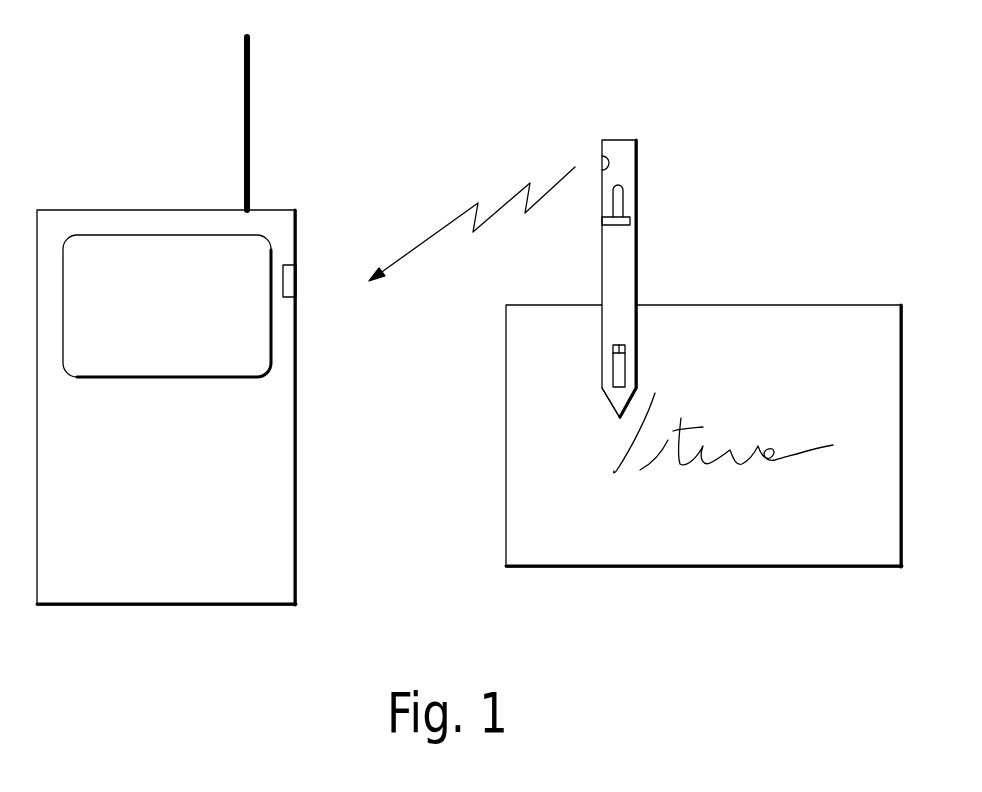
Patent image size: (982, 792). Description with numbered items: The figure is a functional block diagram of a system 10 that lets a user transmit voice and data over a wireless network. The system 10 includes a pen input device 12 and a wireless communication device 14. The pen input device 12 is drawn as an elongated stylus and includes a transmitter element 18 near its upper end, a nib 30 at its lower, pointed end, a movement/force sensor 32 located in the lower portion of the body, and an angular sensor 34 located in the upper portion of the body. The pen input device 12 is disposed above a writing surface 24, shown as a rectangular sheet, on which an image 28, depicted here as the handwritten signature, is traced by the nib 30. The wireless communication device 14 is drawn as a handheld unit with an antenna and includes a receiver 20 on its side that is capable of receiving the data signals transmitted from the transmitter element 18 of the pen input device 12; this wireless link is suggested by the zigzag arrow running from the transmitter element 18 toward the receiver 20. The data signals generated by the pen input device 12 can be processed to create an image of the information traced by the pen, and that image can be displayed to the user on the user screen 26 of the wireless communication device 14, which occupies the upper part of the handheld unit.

The system 10 is at (469, 321).
The pen input device 12 is at (637, 301).
The wireless communication device 14 is at (330, 212).
The transmitter element 18 is at (602, 166).
The receiver 20 is at (297, 268).
The writing surface 24 is at (505, 495).
The user screen 26 is at (135, 378).
The image 28 is at (694, 420).
The nib 30 is at (608, 410).
The movement/force sensor 32 is at (626, 362).
The angular sensor 34 is at (624, 203).